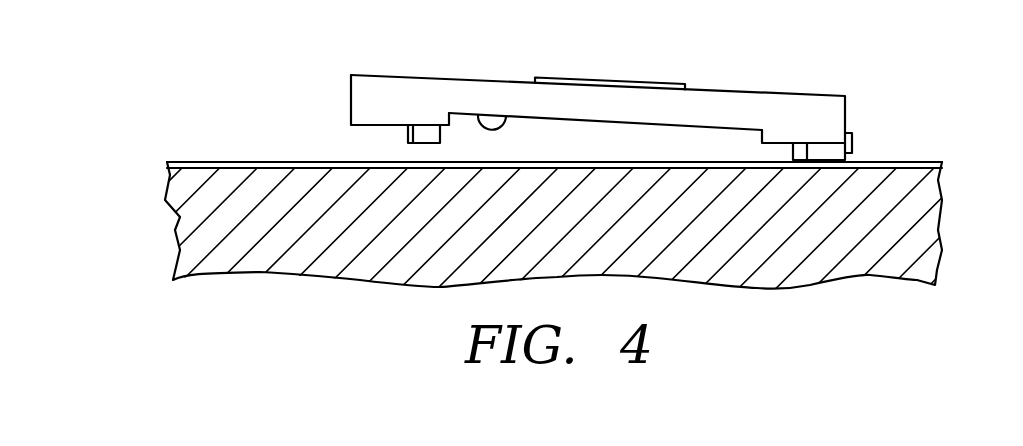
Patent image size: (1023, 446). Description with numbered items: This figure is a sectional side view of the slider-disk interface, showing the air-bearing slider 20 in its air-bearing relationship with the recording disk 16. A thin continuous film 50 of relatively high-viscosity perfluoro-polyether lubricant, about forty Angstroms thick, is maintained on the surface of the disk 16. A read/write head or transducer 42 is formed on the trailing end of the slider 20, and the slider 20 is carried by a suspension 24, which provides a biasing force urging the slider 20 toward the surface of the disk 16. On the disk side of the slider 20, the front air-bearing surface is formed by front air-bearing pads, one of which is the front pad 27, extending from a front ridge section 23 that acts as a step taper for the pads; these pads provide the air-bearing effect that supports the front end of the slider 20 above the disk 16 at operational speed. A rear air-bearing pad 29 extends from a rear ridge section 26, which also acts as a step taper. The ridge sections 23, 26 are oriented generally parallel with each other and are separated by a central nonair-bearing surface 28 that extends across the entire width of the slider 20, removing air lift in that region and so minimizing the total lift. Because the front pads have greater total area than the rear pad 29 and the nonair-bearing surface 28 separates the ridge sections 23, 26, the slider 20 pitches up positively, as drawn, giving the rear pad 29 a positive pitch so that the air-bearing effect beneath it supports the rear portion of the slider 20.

The disk 16 is at (198, 248).
The lubricant film 50 is at (220, 160).
The air-bearing slider 20 is at (707, 82).
The front ridge section 23 is at (351, 125).
The suspension 24 is at (605, 78).
The rear ridge section 26 is at (772, 146).
The front air-bearing pad 27 is at (418, 145).
The central nonair-bearing surface 28 is at (483, 112).
The rear air-bearing pad 29 is at (827, 162).
The transducer 42 is at (855, 143).